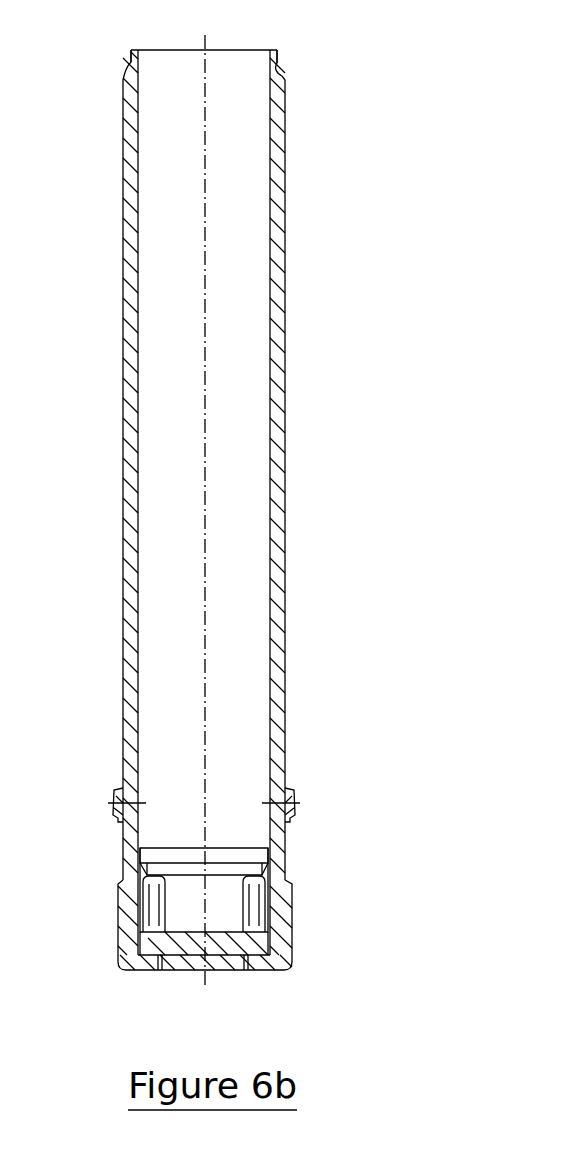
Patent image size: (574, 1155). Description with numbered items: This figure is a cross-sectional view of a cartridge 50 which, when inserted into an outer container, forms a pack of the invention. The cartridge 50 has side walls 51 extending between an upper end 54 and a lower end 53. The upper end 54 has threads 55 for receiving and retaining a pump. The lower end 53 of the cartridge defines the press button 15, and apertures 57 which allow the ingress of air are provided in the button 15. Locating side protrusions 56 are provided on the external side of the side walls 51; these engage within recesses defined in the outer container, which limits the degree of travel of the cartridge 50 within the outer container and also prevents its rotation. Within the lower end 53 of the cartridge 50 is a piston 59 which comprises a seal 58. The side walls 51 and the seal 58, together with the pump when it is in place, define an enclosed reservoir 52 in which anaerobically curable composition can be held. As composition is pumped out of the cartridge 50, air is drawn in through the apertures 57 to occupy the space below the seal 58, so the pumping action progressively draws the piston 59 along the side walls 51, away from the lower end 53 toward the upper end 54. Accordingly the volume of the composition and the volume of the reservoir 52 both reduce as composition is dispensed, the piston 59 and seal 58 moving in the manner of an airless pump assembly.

The cartridge 50 is at (92, 498).
The upper end 54 is at (319, 118).
The threads 55 is at (282, 70).
The side walls 51 is at (285, 390).
The reservoir 52 is at (238, 293).
The locating side protrusions 56 is at (119, 792).
The lower end 53 is at (94, 921).
The seal 58 is at (228, 852).
The piston 59 is at (257, 898).
The press button 15 is at (283, 918).
The apertures 57 is at (161, 983).